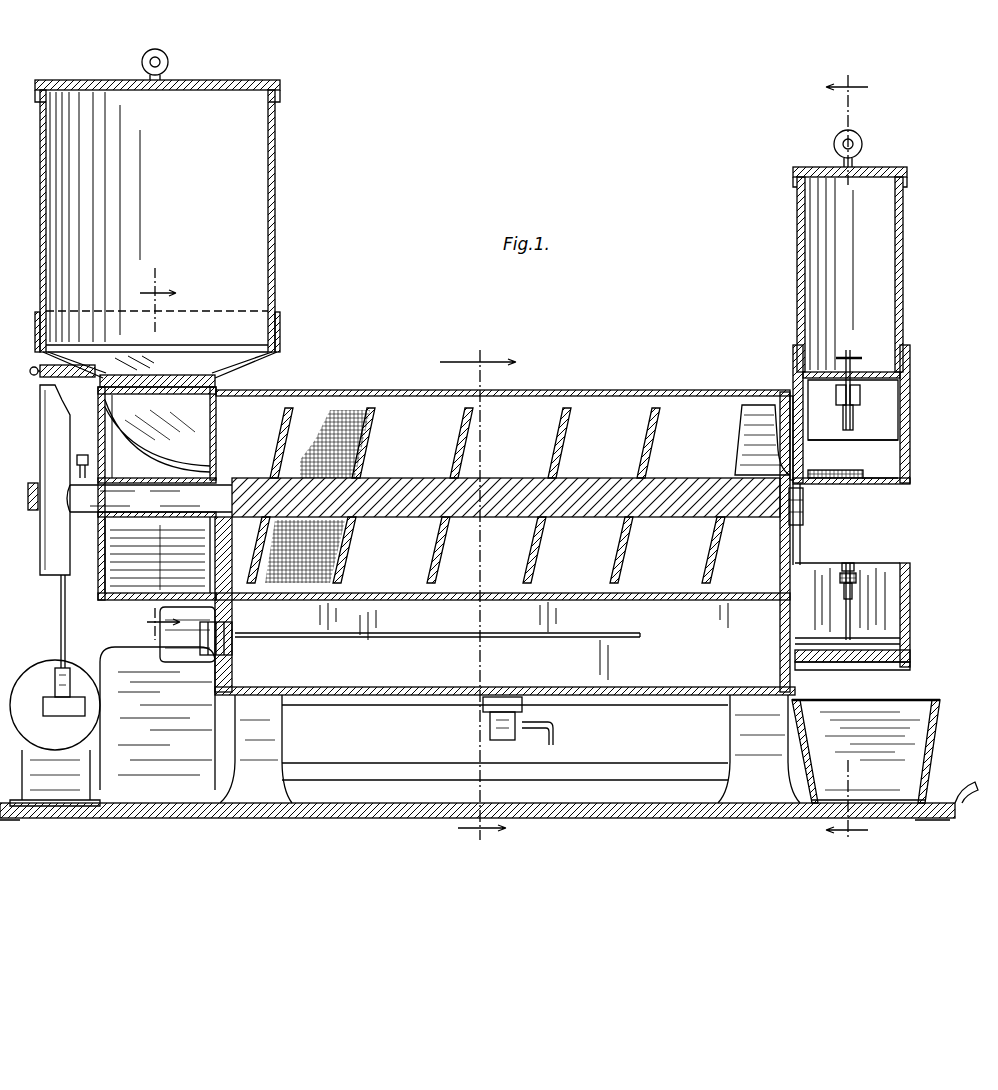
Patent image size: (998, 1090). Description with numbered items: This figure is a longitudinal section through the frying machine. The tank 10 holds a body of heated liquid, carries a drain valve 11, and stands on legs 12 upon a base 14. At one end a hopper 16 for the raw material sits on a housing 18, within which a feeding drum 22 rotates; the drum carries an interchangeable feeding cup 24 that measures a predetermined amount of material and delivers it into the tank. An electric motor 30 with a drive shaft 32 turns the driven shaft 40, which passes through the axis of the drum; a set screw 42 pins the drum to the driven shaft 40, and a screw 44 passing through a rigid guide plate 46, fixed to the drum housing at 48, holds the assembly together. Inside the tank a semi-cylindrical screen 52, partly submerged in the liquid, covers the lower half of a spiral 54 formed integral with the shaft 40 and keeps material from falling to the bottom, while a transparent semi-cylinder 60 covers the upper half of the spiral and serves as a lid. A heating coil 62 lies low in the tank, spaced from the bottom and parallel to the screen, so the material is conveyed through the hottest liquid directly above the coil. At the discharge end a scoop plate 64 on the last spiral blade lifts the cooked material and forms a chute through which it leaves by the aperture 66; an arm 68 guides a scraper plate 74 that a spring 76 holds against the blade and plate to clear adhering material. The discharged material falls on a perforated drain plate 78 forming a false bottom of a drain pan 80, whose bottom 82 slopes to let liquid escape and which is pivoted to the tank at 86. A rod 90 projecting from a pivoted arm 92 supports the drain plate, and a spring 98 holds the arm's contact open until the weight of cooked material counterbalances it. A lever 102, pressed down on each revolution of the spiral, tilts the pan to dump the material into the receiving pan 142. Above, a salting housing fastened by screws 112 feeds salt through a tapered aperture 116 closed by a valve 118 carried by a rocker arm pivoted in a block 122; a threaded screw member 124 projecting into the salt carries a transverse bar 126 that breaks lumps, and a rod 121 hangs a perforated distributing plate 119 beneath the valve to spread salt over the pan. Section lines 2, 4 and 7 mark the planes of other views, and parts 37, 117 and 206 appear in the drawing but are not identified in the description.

The section line 2- 2 is at (466, 595).
The section line 4- 4 is at (856, 458).
The section line 7- 7 is at (151, 454).
The tank 10 is at (505, 606).
The drain valve 11 is at (482, 722).
The legs 12 is at (272, 758).
The base 14 is at (640, 808).
The hopper 16 is at (276, 258).
The housing 18 is at (110, 603).
The drum 22 is at (99, 440).
The feeding cup 24 is at (240, 388).
The electric motor 30 is at (100, 690).
The drive shaft 32 is at (66, 682).
The rod 37 is at (66, 614).
The driven shaft 40 is at (200, 495).
The set screw 42 is at (83, 457).
The screw 44 is at (32, 490).
The rigid guide plate 46 is at (50, 447).
The guide plate fixing 48 is at (48, 371).
The screen 52 is at (350, 456).
The spiral 54 is at (558, 458).
The semi-cylinder 60 is at (598, 392).
The heating coil 62 is at (540, 640).
The scoop plate 64 is at (762, 405).
The discharge aperture 66 is at (790, 398).
The arm 68 is at (868, 486).
The scraper plate 74 is at (845, 460).
The spring 76 is at (782, 518).
The perforated drain plate 78 is at (855, 640).
The drain pan 80 is at (910, 608).
The pan bottom 82 is at (880, 655).
The pivot fastening 86 is at (838, 672).
The rod 90 is at (850, 618).
The arm 92 is at (850, 564).
The spring 98 is at (856, 577).
The lever 102 is at (802, 562).
The screws 112 is at (910, 420).
The aperture 116 is at (903, 350).
The tank 117 is at (905, 294).
The valve 118 is at (877, 393).
The perforated distributing plate 119 is at (871, 417).
The rod 121 is at (853, 451).
The block 122 is at (828, 393).
The threaded screw member 124 is at (862, 358).
The transversely extending bar 126 is at (850, 350).
The receiving pan 142 is at (934, 728).
The lever 206 is at (803, 512).